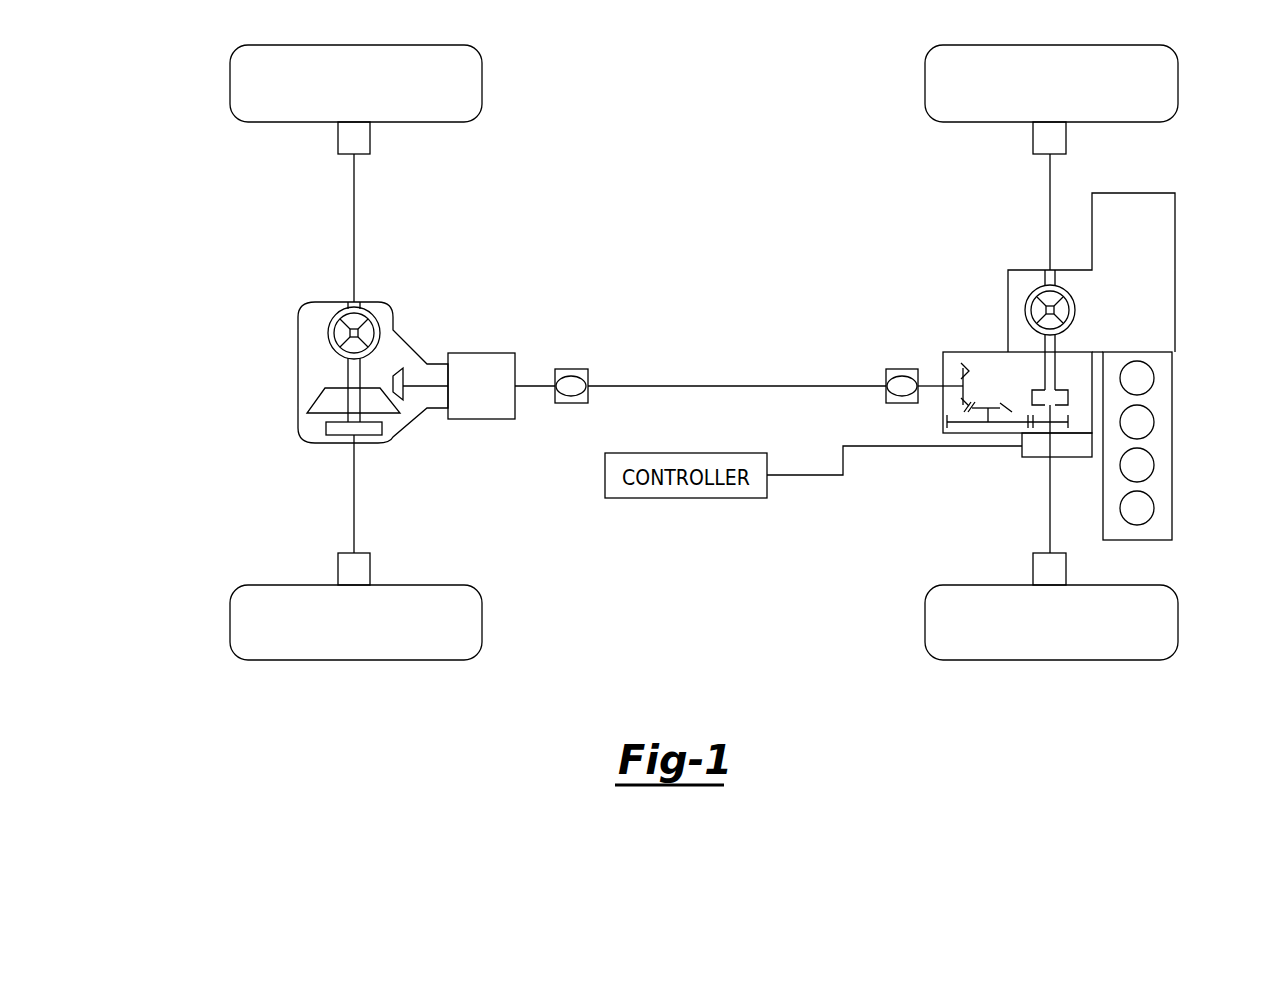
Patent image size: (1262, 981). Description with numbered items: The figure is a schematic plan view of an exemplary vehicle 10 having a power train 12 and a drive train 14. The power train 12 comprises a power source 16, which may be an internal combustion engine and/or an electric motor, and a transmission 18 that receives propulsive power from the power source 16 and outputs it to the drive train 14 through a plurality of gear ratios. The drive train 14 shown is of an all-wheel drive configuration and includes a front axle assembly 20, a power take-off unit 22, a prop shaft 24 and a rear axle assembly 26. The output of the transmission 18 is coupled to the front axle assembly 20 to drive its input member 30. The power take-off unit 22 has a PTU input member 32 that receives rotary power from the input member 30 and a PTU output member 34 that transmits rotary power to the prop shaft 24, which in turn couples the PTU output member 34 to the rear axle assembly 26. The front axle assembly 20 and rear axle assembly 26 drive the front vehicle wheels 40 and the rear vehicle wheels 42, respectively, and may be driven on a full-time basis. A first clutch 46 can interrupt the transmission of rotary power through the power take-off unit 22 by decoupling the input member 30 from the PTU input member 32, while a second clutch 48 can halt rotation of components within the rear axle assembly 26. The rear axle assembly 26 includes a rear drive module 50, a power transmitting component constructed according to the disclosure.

The vehicle 10 is at (180, 700).
The power train 12 is at (1173, 455).
The drive train 14 is at (728, 332).
The power source 16 is at (1165, 537).
The transmission 18 is at (1168, 207).
The front axle assembly 20 is at (1092, 291).
The power take-off unit 22 is at (1046, 399).
The prop shaft 24 is at (632, 386).
The rear axle assembly 26 is at (355, 388).
The input member 30 is at (1078, 313).
The PTU input member 32 is at (1040, 424).
The PTU output member 34 is at (928, 386).
The front vehicle wheels 40 is at (925, 80).
The rear vehicle wheels 42 is at (230, 80).
The first clutch 46 is at (1068, 398).
The second clutch 48 is at (348, 432).
The rear drive module 50 is at (303, 373).